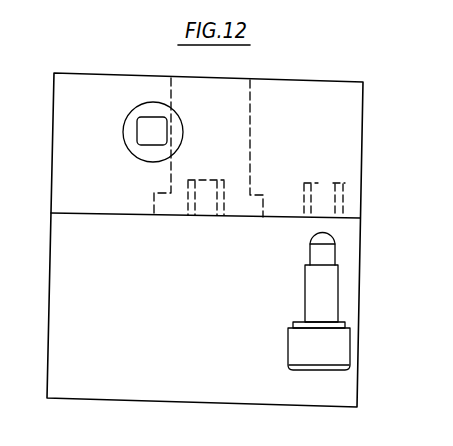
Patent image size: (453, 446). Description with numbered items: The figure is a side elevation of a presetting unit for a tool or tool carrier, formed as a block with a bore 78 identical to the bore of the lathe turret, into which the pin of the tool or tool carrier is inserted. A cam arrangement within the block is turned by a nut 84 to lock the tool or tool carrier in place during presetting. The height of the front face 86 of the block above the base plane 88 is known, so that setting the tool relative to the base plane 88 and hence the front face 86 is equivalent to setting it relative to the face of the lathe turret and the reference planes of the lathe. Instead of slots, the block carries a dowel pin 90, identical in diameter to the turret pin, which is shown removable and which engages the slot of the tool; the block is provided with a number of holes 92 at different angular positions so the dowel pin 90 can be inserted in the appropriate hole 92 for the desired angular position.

The bore 78 is at (215, 93).
The nut 84 is at (162, 125).
The front face 86 is at (105, 213).
The base plane 88 is at (152, 400).
The dowel pin 90 is at (322, 252).
The holes 92 is at (230, 183).